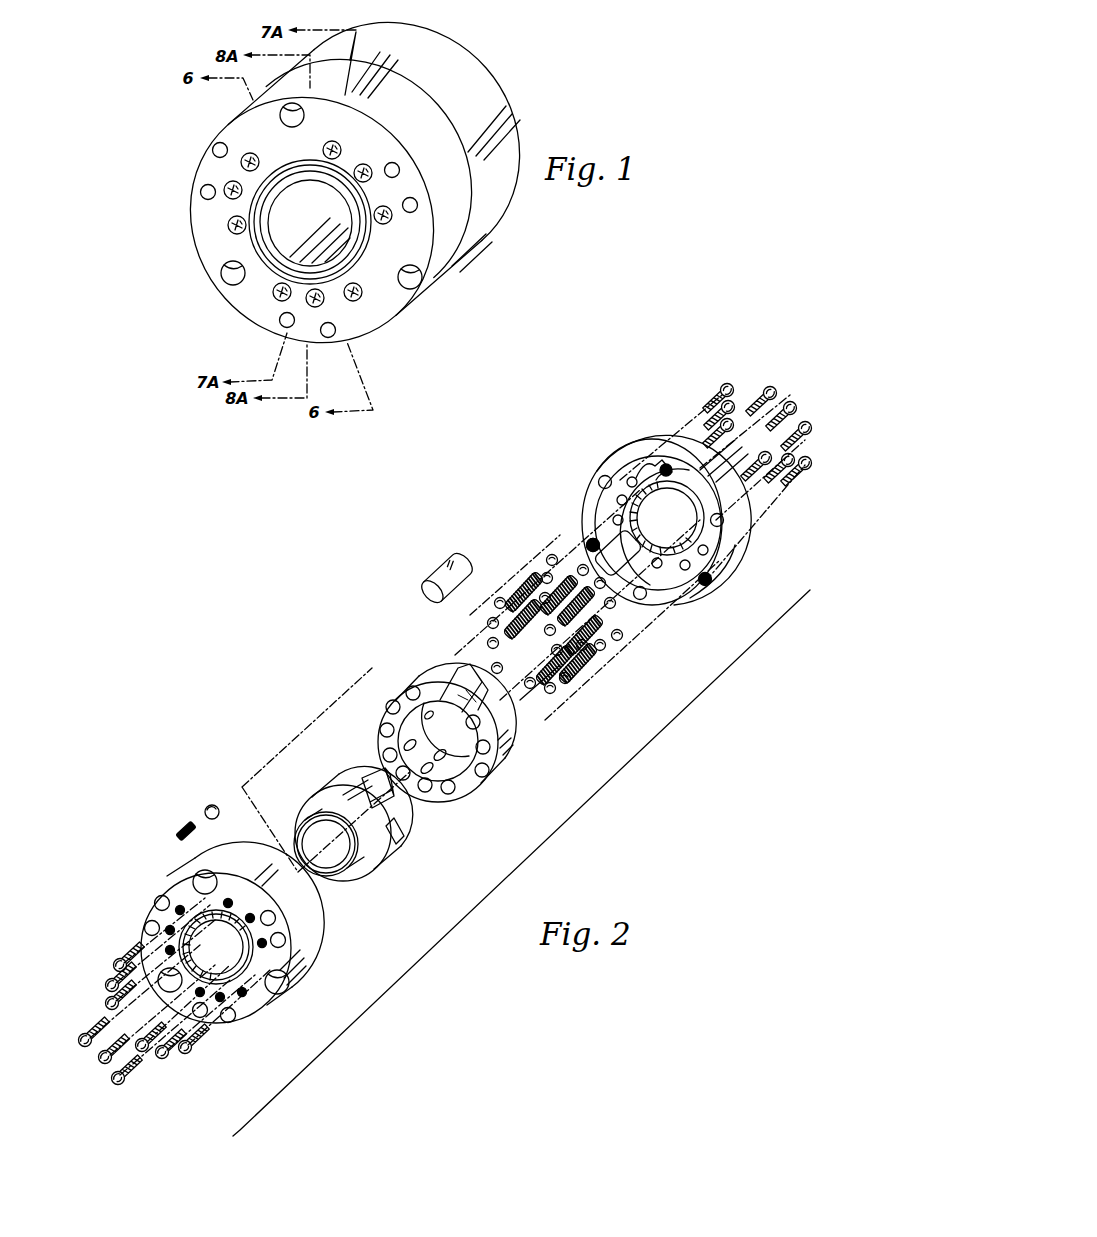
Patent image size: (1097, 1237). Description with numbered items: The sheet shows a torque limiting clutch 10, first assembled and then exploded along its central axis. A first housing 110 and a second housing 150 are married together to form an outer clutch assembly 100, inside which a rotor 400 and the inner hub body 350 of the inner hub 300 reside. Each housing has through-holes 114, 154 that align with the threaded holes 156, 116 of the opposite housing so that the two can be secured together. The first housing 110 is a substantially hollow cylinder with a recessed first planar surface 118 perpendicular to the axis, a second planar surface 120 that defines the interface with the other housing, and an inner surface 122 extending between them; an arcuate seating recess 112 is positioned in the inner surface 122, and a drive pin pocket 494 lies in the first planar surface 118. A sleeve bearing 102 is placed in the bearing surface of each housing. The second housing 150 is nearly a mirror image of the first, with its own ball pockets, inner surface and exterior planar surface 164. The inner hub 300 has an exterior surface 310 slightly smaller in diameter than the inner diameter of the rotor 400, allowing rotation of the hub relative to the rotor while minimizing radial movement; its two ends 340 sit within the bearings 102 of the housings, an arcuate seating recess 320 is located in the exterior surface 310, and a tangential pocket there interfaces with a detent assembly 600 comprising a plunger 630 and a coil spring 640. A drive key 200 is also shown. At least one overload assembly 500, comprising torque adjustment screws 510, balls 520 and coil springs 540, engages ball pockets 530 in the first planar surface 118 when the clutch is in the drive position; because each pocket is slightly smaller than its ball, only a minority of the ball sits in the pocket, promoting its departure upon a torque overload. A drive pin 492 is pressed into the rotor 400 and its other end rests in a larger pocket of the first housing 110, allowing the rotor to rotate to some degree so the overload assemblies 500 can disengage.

In FIG. 1, the torque limiting clutch 10 is at (155, 175).
In FIG. 2, the torque limiting clutch 10 is at (546, 872).
In FIG. 1, the outer clutch assembly 100 is at (486, 258).
In FIG. 2, the sleeve bearing 102 is at (700, 582).
In FIG. 1, the first housing 110 is at (497, 132).
In FIG. 2, the first housing 110 is at (628, 445).
In FIG. 2, the arcuate seating recess 112 is at (655, 464).
In FIG. 2, the through-holes 114 is at (722, 522).
In FIG. 2, the threaded holes 116 is at (669, 466).
In FIG. 2, the first planar surface 118 is at (727, 555).
In FIG. 2, the second planar surface 120 is at (712, 578).
In FIG. 2, the inner surface 122 is at (600, 508).
In FIG. 1, the second housing 150 is at (445, 285).
In FIG. 2, the second housing 150 is at (202, 867).
In FIG. 1, the through-holes 154 is at (402, 282).
In FIG. 2, the through-holes 154 is at (286, 988).
In FIG. 1, the threaded holes 156 is at (205, 190).
In FIG. 2, the threaded holes 156 is at (152, 926).
In FIG. 2, the exterior planar surface 164 is at (177, 895).
In FIG. 2, the drive key 200 is at (428, 580).
In FIG. 2, the inner hub 300 is at (318, 765).
In FIG. 2, the exterior surface 310 is at (342, 770).
In FIG. 2, the arcuate seating recess 320 is at (320, 818).
In FIG. 2, the ends 340 is at (396, 830).
In FIG. 2, the inner hub body 350 is at (377, 835).
In FIG. 2, the rotor 400 is at (395, 663).
In FIG. 2, the drive pin 492 is at (552, 672).
In FIG. 2, the drive pin first end 494 is at (590, 542).
In FIG. 2, the overload assembly 500 is at (524, 590).
In FIG. 2, the torque adjustment screws 510 is at (186, 1052).
In FIG. 2, the balls 520 is at (545, 596).
In FIG. 2, the ball pockets 530 is at (687, 570).
In FIG. 2, the coil springs 540 is at (527, 620).
In FIG. 2, the detent assembly 600 is at (198, 803).
In FIG. 2, the plunger 630 is at (212, 805).
In FIG. 2, the coil spring 640 is at (182, 827).